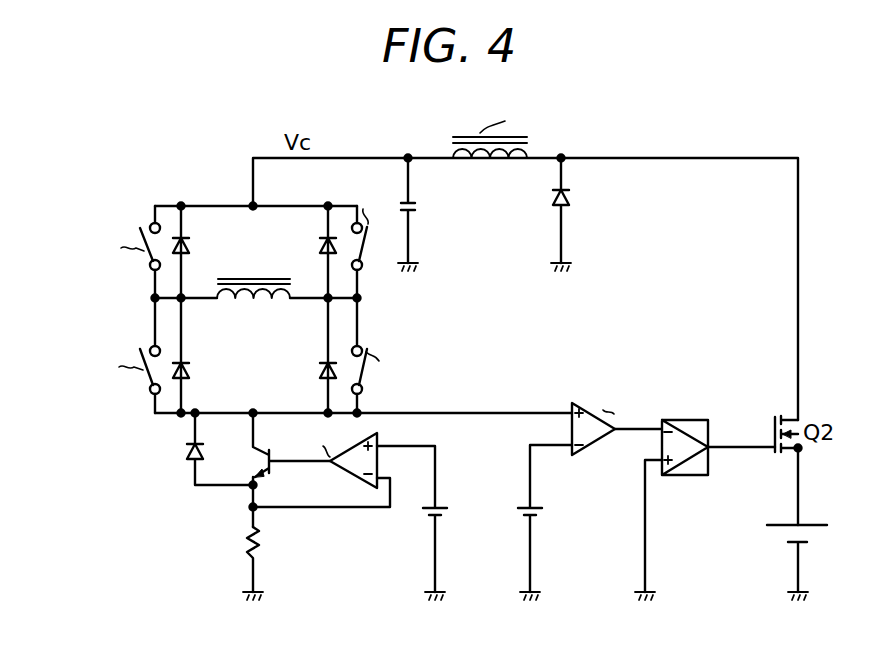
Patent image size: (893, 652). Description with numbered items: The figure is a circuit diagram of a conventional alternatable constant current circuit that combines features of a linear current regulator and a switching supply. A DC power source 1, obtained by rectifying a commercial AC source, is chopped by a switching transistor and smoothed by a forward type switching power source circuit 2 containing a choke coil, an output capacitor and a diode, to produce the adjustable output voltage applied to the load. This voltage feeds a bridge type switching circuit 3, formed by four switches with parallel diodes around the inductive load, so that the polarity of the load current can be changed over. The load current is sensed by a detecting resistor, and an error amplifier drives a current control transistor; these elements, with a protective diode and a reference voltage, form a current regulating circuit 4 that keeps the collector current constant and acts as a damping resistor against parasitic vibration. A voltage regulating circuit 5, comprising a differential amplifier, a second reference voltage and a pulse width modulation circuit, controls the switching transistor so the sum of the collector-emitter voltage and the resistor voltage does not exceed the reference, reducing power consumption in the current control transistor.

The DC power source 1 is at (812, 524).
The switching power source circuit 2 is at (662, 301).
The bridge type switching circuit 3 is at (100, 322).
The current regulating circuit 4 is at (223, 503).
The voltage regulating circuit 5 is at (603, 585).